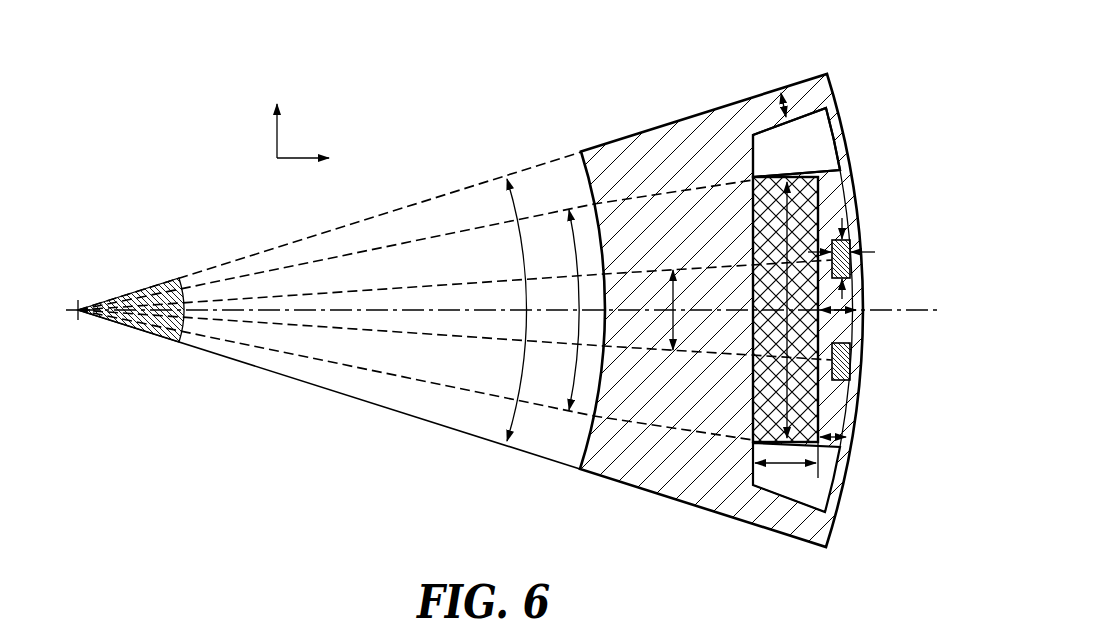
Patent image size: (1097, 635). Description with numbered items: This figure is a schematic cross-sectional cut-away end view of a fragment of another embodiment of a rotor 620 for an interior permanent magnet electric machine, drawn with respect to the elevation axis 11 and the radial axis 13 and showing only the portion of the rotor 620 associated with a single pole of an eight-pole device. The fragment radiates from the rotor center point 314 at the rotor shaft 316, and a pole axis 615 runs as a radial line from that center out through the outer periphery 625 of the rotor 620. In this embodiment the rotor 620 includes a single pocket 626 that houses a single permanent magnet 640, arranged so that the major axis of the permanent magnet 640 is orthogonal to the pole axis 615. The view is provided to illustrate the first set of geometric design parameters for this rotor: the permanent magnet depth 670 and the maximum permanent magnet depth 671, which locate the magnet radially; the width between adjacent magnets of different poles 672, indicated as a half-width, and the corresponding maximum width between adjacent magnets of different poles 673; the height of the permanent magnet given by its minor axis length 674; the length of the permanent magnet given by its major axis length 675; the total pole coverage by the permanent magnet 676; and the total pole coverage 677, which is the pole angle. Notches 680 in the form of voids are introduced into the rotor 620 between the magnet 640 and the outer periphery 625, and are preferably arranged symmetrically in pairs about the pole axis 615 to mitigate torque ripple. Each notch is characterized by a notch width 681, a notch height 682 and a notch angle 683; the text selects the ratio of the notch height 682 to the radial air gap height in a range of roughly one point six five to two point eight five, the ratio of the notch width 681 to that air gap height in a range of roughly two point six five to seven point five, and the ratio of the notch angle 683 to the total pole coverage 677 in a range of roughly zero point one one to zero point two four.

The elevation axis 11 is at (290, 100).
The radial axis 13 is at (358, 168).
The rotor center point 314 is at (74, 316).
The rotor shaft 316 is at (150, 286).
The pole axis 615 is at (480, 307).
The rotor 620 is at (278, 240).
The outer periphery 625 is at (840, 121).
The pocket 626 is at (825, 472).
The permanent magnet 640 is at (803, 370).
The permanent magnet depth 670 is at (886, 354).
The maximum permanent magnet depth 671 is at (937, 313).
The width between adjacent magnets of different poles 672 is at (837, 105).
The maximum width between adjacent magnets of different poles 673 is at (786, 105).
The minor axis length 674 is at (793, 467).
The major axis length 675 is at (793, 247).
The total pole coverage by the permanent magnet 676 is at (573, 267).
The total pole coverage 677 is at (517, 392).
The notches 680 is at (850, 344).
The notch width 681 is at (838, 224).
The notch height 682 is at (866, 251).
The notch angle 683 is at (673, 300).